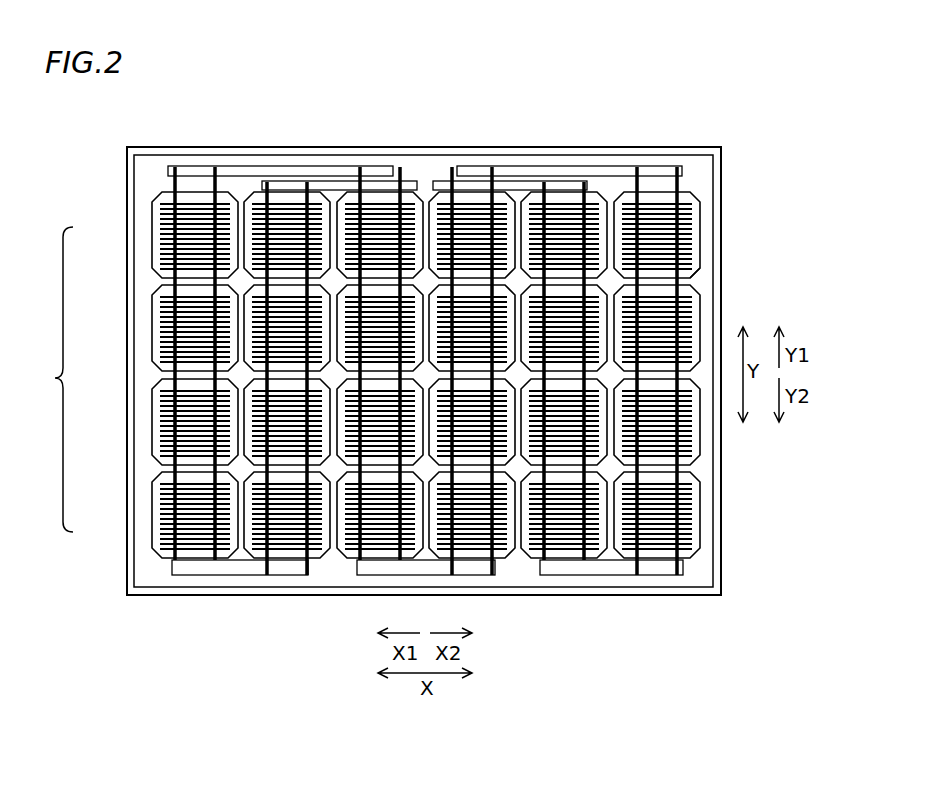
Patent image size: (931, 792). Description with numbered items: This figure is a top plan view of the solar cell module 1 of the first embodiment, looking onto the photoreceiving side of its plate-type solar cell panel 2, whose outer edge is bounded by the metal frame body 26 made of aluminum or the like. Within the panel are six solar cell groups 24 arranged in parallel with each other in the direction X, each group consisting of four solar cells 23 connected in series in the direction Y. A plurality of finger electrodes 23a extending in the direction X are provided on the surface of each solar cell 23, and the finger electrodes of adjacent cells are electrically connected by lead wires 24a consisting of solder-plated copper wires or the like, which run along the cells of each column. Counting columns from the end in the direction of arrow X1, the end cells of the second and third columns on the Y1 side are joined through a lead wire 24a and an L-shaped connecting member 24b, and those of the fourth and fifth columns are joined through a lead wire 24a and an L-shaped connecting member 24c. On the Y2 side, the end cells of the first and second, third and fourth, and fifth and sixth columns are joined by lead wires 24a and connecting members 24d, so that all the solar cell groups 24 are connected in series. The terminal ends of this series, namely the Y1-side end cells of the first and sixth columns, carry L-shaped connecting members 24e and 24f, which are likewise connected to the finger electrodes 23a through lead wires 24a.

The solar cell module 1 is at (479, 116).
The solar cell panel 2 is at (698, 160).
The solar cell 23 is at (152, 248).
The finger electrode 23a is at (694, 272).
The solar cell group 24 is at (48, 379).
The lead wire 24a is at (680, 179).
The L-shaped connecting member 24b is at (346, 183).
The L-shaped connecting member 24c is at (540, 183).
The connecting member 24d is at (220, 570).
The L-shaped connecting member 24e is at (243, 168).
The L-shaped connecting member 24f is at (612, 168).
The frame body 26 is at (718, 231).